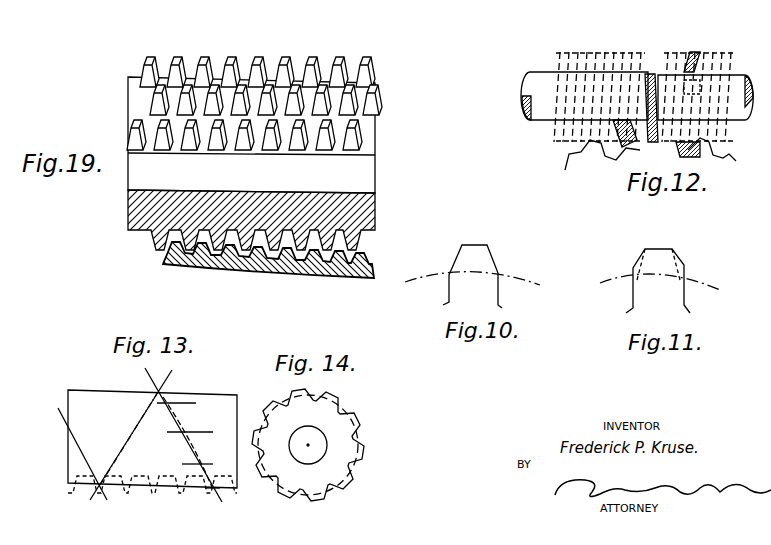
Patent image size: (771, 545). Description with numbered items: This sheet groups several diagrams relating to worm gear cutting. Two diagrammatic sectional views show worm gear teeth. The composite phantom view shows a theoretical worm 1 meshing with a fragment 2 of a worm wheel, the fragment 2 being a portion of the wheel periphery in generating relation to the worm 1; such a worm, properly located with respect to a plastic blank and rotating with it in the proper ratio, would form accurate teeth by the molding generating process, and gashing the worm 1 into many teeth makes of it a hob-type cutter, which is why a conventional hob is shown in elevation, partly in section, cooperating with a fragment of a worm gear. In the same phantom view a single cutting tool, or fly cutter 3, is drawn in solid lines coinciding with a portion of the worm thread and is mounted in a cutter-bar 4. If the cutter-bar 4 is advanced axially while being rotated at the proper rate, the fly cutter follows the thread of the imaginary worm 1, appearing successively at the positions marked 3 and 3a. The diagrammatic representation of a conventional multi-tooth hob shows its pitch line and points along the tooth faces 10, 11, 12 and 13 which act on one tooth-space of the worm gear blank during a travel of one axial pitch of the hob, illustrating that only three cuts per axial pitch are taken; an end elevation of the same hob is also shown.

In FIG. 12, the worm 1 is at (590, 58).
In FIG. 12, the fragment of a worm wheel 2 is at (707, 157).
In FIG. 12, the fly cutter 3 is at (623, 142).
In FIG. 12, the fly cutter 3a is at (691, 78).
In FIG. 12, the cutter-bar 4 is at (534, 90).
In FIG. 13, the tooth face 10 is at (170, 400).
In FIG. 13, the tooth face 11 is at (188, 430).
In FIG. 13, the tooth face 12 is at (196, 463).
In FIG. 13, the tooth face 13 is at (212, 489).